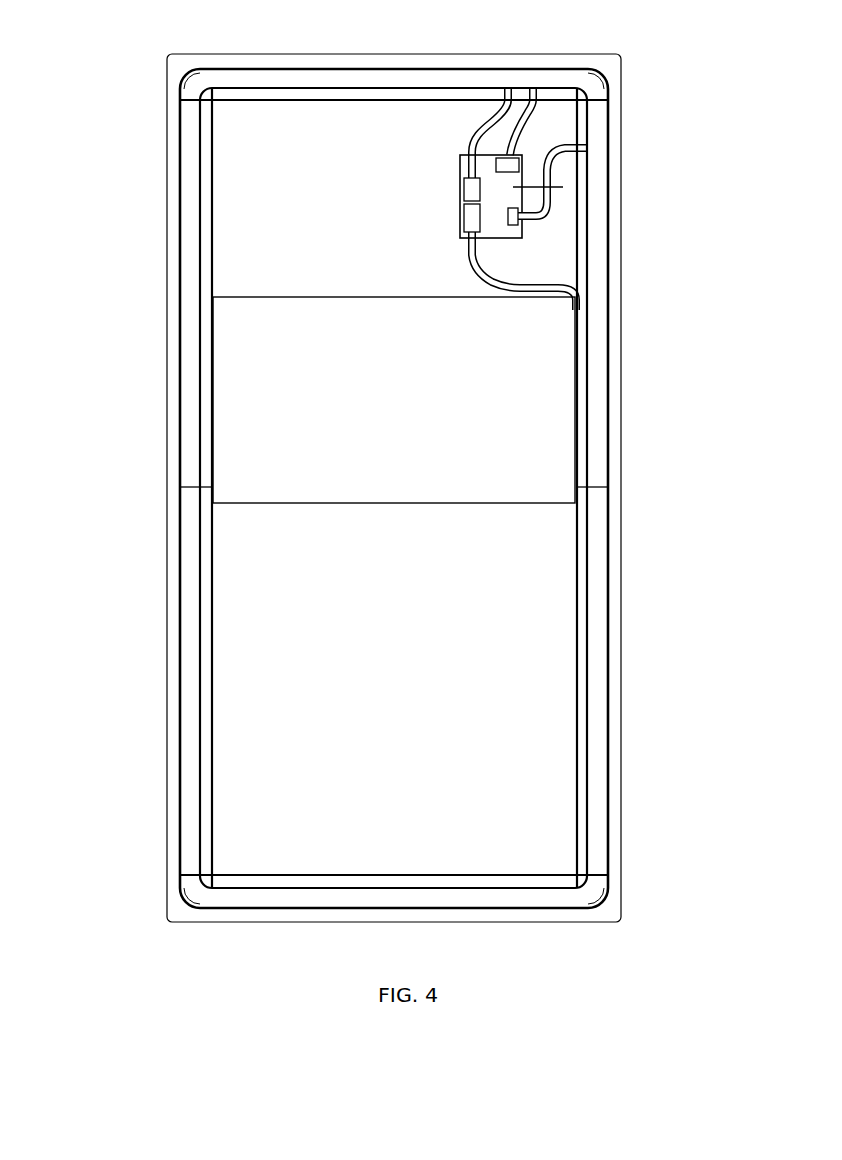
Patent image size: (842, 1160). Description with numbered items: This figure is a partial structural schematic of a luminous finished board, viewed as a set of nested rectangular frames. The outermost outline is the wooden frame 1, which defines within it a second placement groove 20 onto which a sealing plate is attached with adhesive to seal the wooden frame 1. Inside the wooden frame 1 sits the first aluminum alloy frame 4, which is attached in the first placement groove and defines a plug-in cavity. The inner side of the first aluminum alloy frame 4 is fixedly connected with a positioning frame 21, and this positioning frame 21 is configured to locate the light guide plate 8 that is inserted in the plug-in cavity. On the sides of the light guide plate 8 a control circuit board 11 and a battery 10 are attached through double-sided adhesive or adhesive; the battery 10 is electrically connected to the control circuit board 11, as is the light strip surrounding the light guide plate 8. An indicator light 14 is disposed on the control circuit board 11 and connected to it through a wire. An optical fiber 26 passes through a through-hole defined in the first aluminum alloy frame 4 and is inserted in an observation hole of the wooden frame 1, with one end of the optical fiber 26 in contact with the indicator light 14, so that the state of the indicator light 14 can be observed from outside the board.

The wooden frame 1 is at (165, 472).
The first aluminum alloy frame 4 is at (194, 617).
The light guide plate 8 is at (525, 598).
The battery 10 is at (377, 487).
The control circuit board 11 is at (458, 152).
The indicator light 14 is at (513, 188).
The second placement groove 20 is at (603, 897).
The positioning frame 21 is at (213, 722).
The optical fiber 26 is at (563, 187).